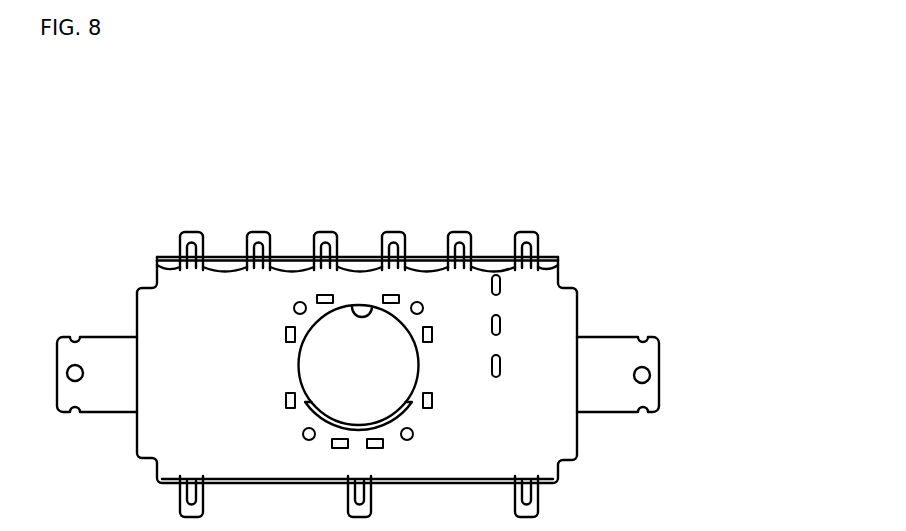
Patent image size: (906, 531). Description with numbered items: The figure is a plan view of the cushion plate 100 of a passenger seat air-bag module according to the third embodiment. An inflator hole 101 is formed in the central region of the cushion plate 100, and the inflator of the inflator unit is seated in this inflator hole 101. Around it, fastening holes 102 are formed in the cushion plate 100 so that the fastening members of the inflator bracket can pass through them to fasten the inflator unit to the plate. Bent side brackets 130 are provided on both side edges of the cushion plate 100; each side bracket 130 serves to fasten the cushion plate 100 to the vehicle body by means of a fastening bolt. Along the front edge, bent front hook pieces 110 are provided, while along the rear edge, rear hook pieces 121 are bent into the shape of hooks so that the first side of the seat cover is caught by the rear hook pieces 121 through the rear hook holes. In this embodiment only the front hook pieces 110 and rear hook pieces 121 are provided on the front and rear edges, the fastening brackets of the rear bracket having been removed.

The cushion plate 100 is at (222, 300).
The inflator hole 101 is at (367, 306).
The fastening holes 102 is at (300, 302).
The front hook piece 110 is at (523, 240).
The rear hook piece 121 is at (527, 500).
The side bracket 130 is at (625, 366).